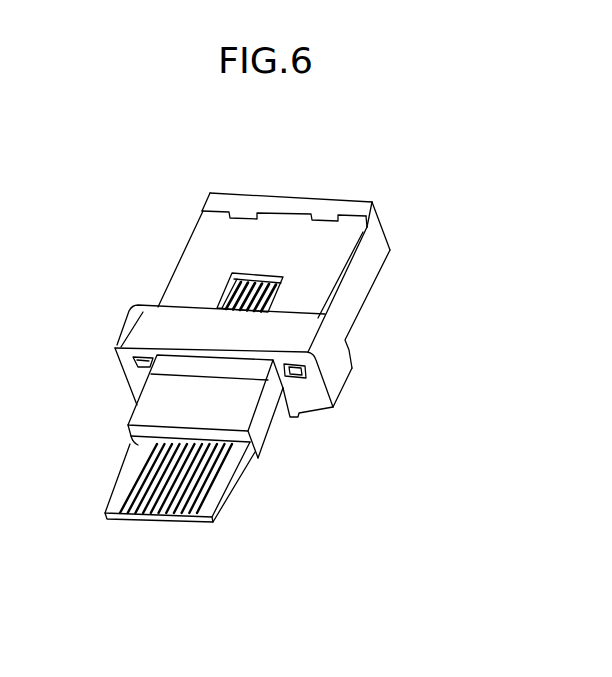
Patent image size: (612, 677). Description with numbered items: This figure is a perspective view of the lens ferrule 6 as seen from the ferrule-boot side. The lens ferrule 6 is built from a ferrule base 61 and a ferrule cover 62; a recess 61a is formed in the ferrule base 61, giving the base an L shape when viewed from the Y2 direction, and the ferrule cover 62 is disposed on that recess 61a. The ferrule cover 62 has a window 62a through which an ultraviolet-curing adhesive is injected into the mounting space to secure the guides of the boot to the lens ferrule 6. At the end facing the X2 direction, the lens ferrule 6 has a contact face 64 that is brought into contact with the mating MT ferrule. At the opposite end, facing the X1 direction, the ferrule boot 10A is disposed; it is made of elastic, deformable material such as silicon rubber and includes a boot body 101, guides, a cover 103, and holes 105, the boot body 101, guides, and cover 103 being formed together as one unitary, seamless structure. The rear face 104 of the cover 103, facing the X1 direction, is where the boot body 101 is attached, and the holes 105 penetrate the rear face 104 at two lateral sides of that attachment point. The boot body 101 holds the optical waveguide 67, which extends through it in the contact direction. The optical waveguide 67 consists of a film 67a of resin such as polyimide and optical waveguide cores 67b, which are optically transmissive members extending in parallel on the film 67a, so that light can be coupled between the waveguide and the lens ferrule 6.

The lens ferrule 6 is at (56, 170).
The ferrule boot 10A is at (305, 433).
The ferrule base 61 is at (396, 282).
The recess 61a is at (345, 283).
The ferrule cover 62 is at (190, 251).
The window 62a is at (230, 283).
The contact face 64 is at (380, 213).
The optical waveguide 67 is at (106, 492).
The film 67a is at (218, 486).
The optical waveguide cores 67b is at (183, 500).
The boot body 101 is at (152, 407).
The cover 103 is at (145, 327).
The rear face 104 is at (317, 397).
The holes 105 is at (143, 365).